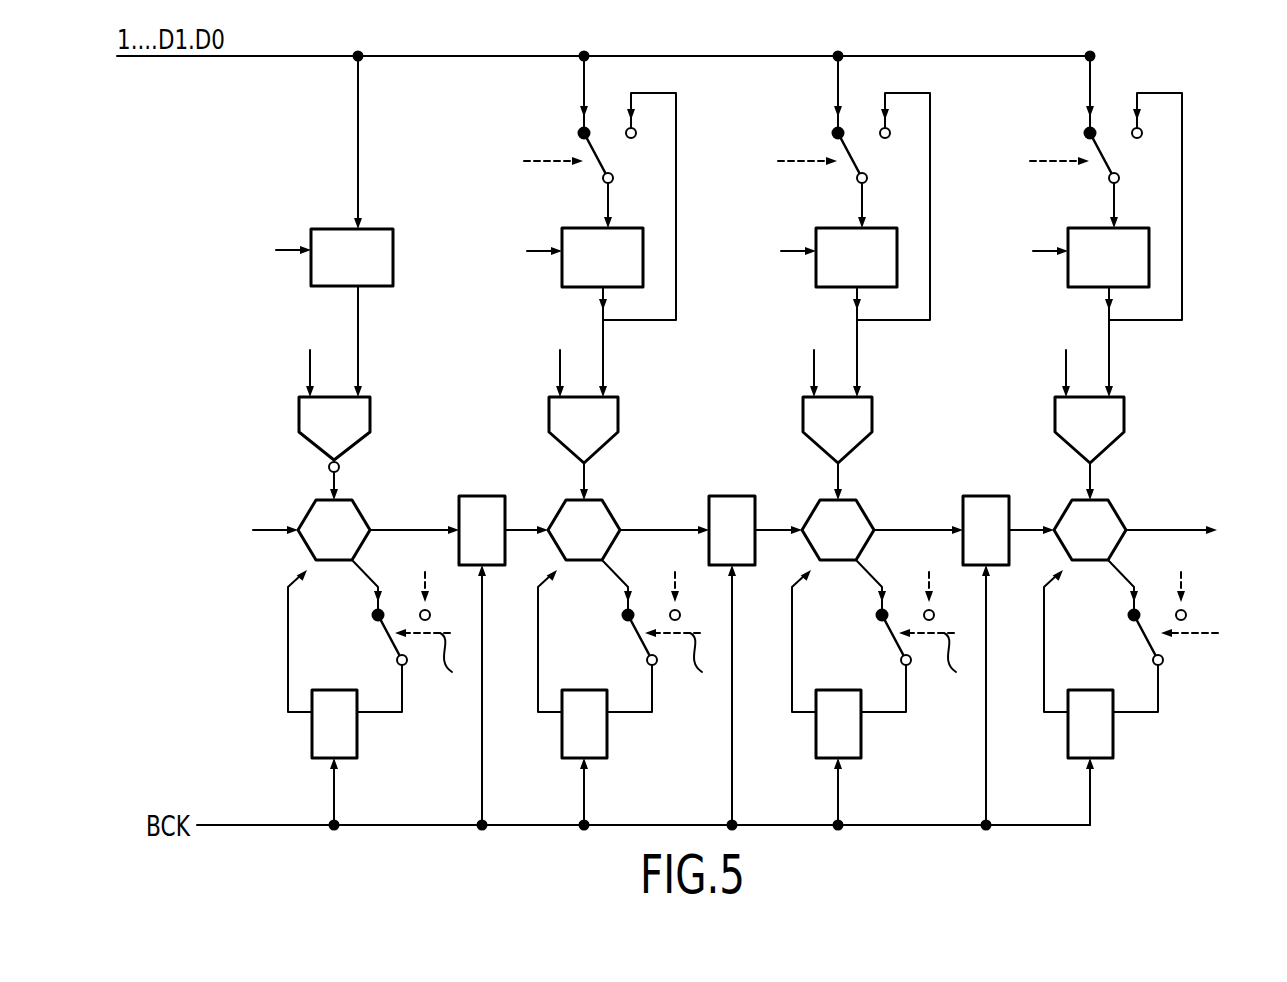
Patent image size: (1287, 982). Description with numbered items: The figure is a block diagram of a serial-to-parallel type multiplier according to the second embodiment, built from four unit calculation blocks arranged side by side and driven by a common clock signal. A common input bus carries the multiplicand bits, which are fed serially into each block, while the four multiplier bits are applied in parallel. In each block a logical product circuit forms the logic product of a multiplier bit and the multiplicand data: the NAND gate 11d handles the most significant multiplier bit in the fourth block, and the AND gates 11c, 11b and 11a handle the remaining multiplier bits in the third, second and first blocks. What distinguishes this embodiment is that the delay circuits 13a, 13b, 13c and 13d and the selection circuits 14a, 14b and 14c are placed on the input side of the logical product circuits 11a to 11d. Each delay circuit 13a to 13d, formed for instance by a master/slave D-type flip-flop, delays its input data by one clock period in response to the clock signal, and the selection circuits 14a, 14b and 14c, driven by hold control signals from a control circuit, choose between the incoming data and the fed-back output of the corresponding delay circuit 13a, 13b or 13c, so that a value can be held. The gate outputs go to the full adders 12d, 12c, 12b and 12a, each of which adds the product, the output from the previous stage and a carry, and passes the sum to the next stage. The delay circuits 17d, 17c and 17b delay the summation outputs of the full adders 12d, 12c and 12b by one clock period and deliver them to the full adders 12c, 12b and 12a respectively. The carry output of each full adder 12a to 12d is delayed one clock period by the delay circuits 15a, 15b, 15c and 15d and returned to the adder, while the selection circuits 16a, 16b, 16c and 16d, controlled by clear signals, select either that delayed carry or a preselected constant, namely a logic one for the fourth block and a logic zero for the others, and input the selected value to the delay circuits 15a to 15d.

The AND gate 11a is at (1124, 412).
The AND gate 11b is at (872, 412).
The AND gate 11c is at (618, 412).
The NAND gate 11d is at (370, 412).
The full adder 12a is at (1126, 520).
The full adder 12b is at (874, 520).
The full adder 12c is at (620, 520).
The full adder 12d is at (370, 520).
The delay circuit 13a is at (1138, 228).
The delay circuit 13b is at (886, 228).
The delay circuit 13c is at (632, 228).
The delay circuit 13d is at (330, 229).
The selection circuit 14a is at (1109, 180).
The selection circuit 14b is at (857, 180).
The selection circuit 14c is at (603, 180).
The delay circuit 15a is at (1114, 748).
The delay circuit 15b is at (862, 748).
The delay circuit 15c is at (608, 748).
The delay circuit 15d is at (312, 754).
The selection circuit 16a is at (1152, 660).
The selection circuit 16b is at (900, 660).
The selection circuit 16c is at (646, 660).
The selection circuit 16d is at (396, 660).
The delay circuit 17b is at (988, 452).
The delay circuit 17c is at (734, 452).
The delay circuit 17d is at (484, 452).